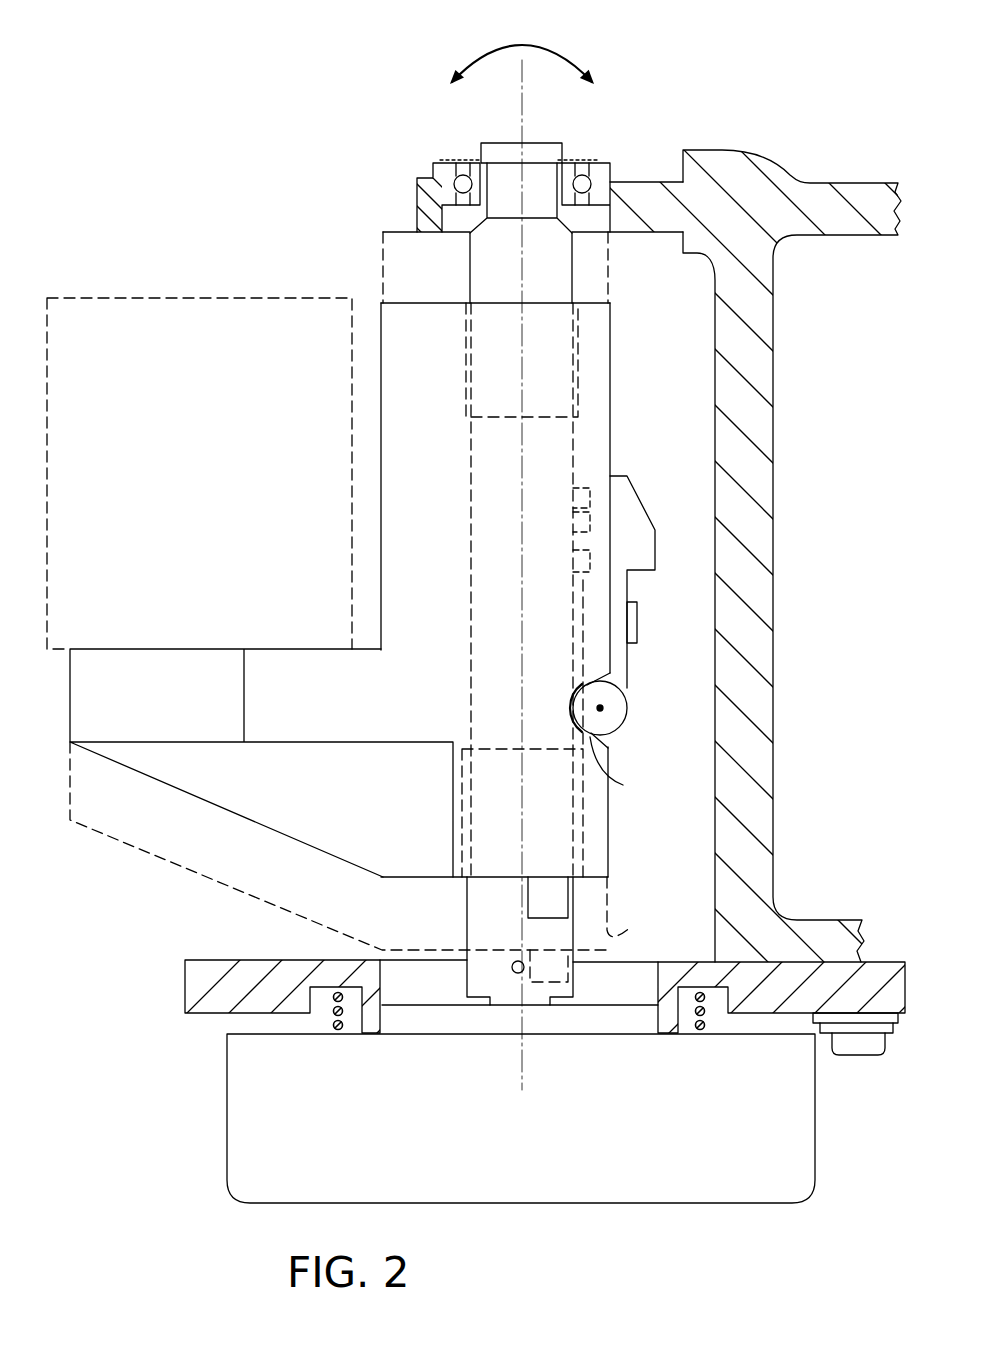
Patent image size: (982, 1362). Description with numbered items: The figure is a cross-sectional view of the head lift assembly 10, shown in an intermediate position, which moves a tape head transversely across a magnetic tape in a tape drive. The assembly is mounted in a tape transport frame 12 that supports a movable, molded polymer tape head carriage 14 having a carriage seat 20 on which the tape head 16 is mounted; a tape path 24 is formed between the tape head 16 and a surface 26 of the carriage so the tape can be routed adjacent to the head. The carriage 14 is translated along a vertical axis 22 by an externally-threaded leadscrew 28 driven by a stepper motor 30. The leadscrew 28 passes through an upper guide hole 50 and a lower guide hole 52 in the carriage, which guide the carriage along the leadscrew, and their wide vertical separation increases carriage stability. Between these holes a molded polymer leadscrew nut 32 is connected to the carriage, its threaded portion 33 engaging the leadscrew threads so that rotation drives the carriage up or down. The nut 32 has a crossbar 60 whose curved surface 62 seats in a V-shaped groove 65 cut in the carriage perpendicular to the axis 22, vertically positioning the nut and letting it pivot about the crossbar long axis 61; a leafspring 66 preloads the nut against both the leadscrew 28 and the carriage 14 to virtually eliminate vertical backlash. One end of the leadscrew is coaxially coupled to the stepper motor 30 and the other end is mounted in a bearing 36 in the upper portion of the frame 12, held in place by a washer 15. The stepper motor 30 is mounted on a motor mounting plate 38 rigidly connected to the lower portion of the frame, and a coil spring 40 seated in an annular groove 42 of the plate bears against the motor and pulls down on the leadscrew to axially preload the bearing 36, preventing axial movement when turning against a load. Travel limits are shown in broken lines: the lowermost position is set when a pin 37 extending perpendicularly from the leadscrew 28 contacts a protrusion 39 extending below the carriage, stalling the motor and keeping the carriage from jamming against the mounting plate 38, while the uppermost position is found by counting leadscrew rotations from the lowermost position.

The head lift assembly 10 is at (222, 232).
The tape transport frame 12 is at (769, 517).
The tape head carriage 14 is at (597, 421).
The washer 15 is at (568, 156).
The tape head 16 is at (143, 312).
The carriage seat 20 is at (185, 648).
The vertical axis 22 is at (523, 116).
The tape path 24 is at (370, 320).
The surface 26 is at (383, 470).
The leadscrew 28 is at (555, 265).
The stepper motor 30 is at (460, 1187).
The leadscrew nut 32 is at (598, 478).
The threaded portion 33 is at (570, 572).
The bearing 36 is at (597, 174).
The pin 37 is at (513, 963).
The motor mounting plate 38 is at (214, 982).
The protrusion 39 is at (555, 905).
The coil spring 40 is at (338, 992).
The annular groove 42 is at (318, 1010).
The upper guide hole 50 is at (577, 340).
The lower guide hole 52 is at (580, 810).
The crossbar 60 is at (613, 722).
The long axis 61 is at (601, 707).
The curved surface 62 is at (573, 708).
The V-shaped groove 65 is at (630, 769).
The leafspring 66 is at (638, 615).